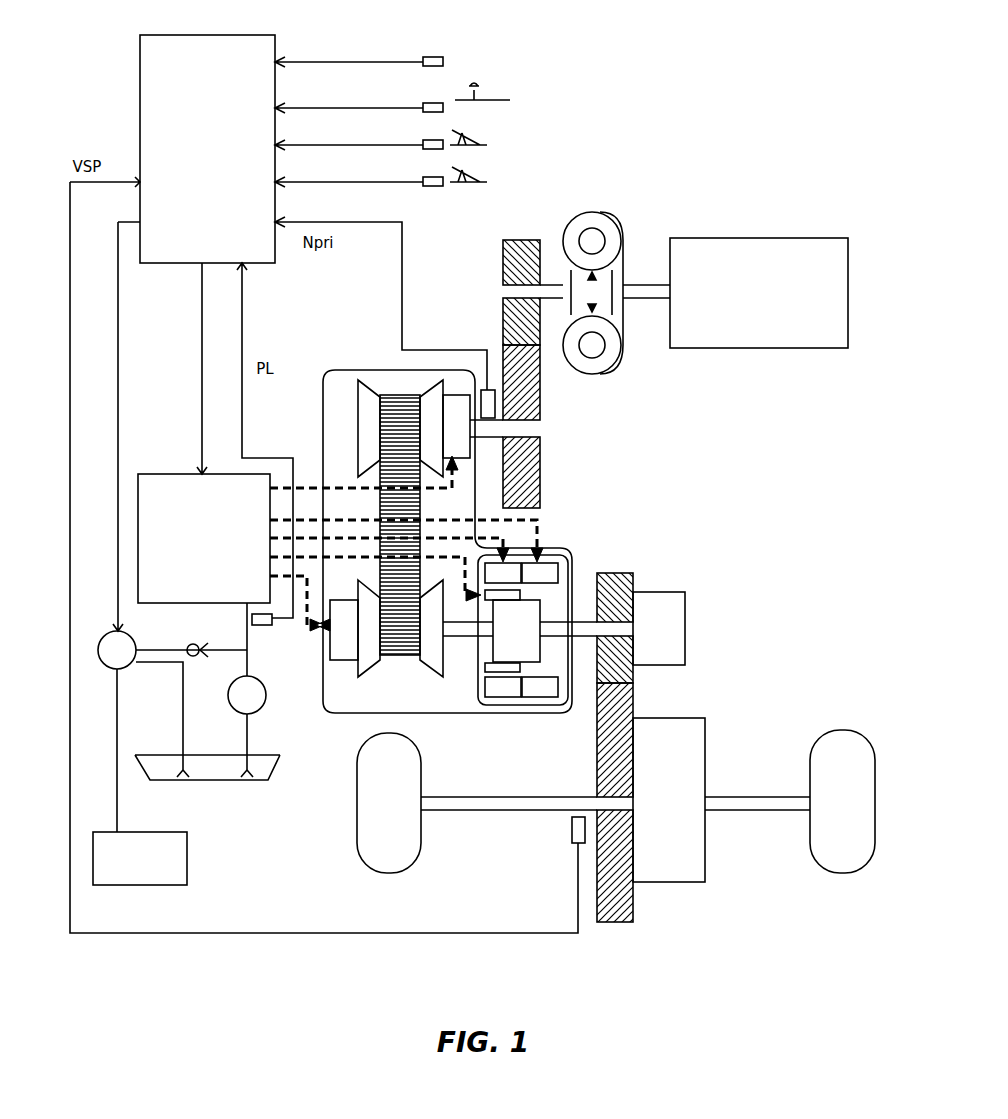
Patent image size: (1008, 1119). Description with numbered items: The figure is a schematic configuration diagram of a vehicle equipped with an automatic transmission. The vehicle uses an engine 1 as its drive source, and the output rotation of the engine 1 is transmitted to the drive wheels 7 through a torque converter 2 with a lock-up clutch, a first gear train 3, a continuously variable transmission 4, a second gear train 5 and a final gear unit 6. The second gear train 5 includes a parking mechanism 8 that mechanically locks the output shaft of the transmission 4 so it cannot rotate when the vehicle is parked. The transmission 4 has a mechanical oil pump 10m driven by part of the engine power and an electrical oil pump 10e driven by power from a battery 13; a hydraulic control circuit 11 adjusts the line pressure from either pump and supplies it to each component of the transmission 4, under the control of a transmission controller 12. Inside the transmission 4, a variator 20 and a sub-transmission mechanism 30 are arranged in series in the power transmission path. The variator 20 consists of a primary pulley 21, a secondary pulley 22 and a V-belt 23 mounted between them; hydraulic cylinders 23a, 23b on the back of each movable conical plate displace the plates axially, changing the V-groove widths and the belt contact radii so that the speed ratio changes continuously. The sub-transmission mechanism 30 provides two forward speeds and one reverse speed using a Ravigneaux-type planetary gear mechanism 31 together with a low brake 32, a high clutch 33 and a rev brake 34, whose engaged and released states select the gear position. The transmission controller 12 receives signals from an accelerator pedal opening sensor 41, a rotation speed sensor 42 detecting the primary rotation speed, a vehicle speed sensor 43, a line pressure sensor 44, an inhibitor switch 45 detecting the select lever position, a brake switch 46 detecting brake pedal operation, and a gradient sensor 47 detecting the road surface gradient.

The engine 1 is at (838, 240).
The torque converter 2 is at (623, 238).
The first gear train 3 is at (522, 232).
The transmission 4 is at (380, 372).
The second gear train 5 is at (620, 938).
The final gear unit 6 is at (668, 882).
The drive wheels 7 is at (390, 872).
The parking mechanism 8 is at (670, 620).
The electrical oil pump 10e is at (120, 667).
The mechanical oil pump 10m is at (258, 708).
The hydraulic control circuit 11 is at (160, 485).
The transmission controller 12 is at (262, 45).
The battery 13 is at (178, 872).
The variator 20 is at (330, 380).
The primary pulley 21 is at (372, 430).
The secondary pulley 22 is at (370, 668).
The V-belt 23 is at (400, 395).
The hydraulic cylinder 23a is at (455, 393).
The hydraulic cylinder 23b is at (335, 660).
The sub-transmission mechanism 30 is at (544, 586).
The Ravigneaux-type planetary gear mechanism 31 is at (522, 625).
The low brake 32 is at (505, 575).
The high clutch 33 is at (490, 666).
The rev brake 34 is at (540, 575).
The accelerator pedal opening sensor 41 is at (436, 187).
The rotation speed sensor 42 is at (484, 388).
The vehicle speed sensor 43 is at (572, 828).
The line pressure sensor 44 is at (262, 626).
The inhibitor switch 45 is at (436, 104).
The brake switch 46 is at (432, 148).
The gradient sensor 47 is at (436, 58).